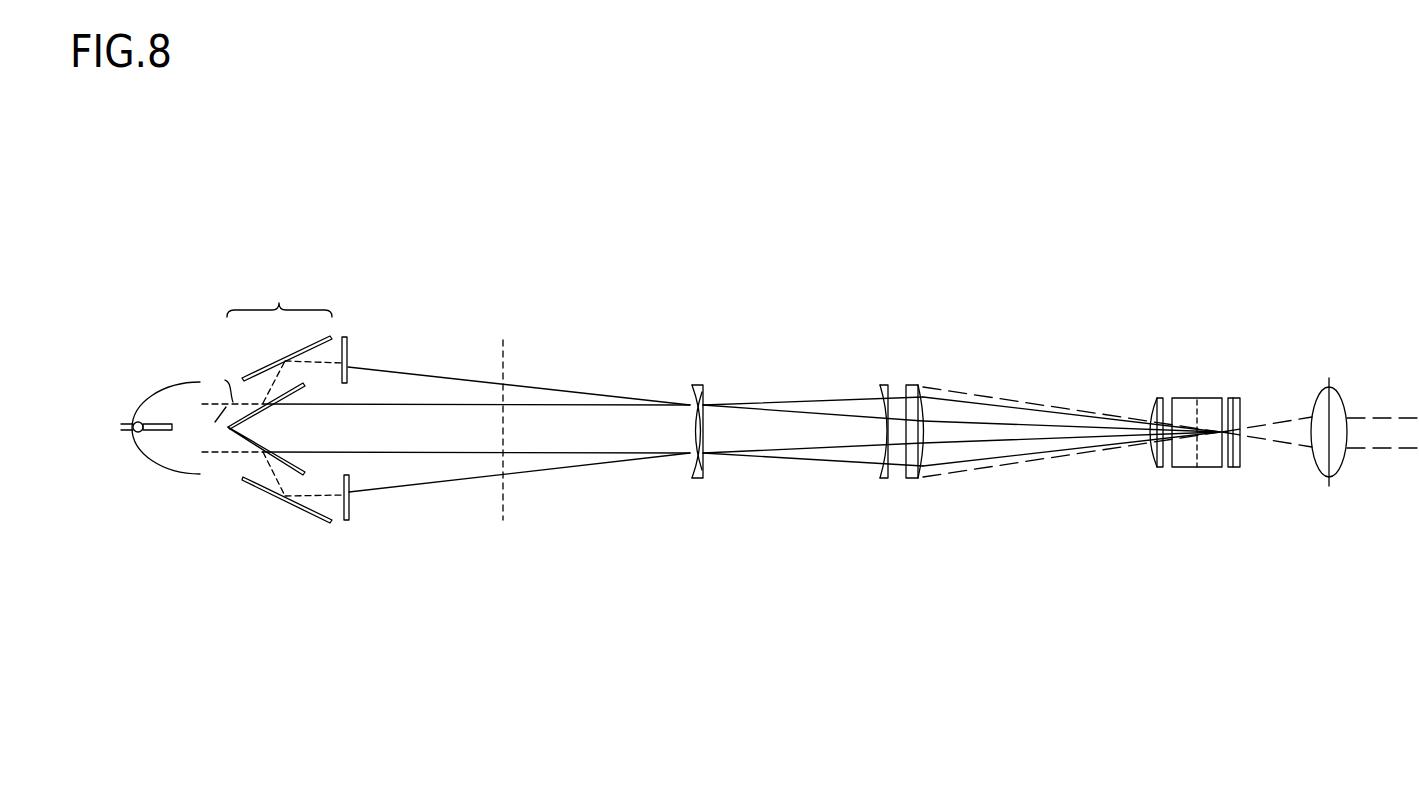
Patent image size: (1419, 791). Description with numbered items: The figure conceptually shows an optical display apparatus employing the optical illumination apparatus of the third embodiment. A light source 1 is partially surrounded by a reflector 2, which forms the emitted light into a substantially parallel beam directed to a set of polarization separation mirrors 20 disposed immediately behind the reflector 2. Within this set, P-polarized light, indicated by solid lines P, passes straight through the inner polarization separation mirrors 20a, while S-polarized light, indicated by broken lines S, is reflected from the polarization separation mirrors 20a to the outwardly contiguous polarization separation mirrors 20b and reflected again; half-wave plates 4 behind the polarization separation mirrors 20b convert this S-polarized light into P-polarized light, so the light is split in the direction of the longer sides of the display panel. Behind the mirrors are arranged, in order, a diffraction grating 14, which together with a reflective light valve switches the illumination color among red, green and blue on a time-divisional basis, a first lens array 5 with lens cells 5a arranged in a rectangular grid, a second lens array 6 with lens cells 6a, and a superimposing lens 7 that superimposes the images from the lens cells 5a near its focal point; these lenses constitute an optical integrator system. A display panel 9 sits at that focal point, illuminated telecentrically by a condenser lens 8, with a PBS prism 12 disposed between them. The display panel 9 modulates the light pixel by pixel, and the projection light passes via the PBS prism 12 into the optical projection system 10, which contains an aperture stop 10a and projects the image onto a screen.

The light source 1 is at (133, 423).
The reflector 2 is at (148, 397).
The half-wave plates 4 is at (347, 352).
The first lens array 5 is at (692, 432).
The lens cells 5a is at (692, 467).
The second lens array 6 is at (865, 434).
The lens cells 6a is at (880, 477).
The superimposing lens 7 is at (913, 390).
The condenser lens 8 is at (1156, 400).
The display panel 9 is at (1237, 398).
The optical projection system 10 is at (1340, 392).
The aperture stop 10a is at (1332, 482).
The PBS prism 12 is at (1183, 400).
The diffraction grating 14 is at (503, 344).
The set of polarization separation mirrors 20 is at (270, 401).
The polarization separation mirrors 20a is at (267, 410).
The polarization separation mirrors 20b is at (257, 360).
The S-polarized light S is at (220, 383).
The P-polarized light P is at (212, 424).